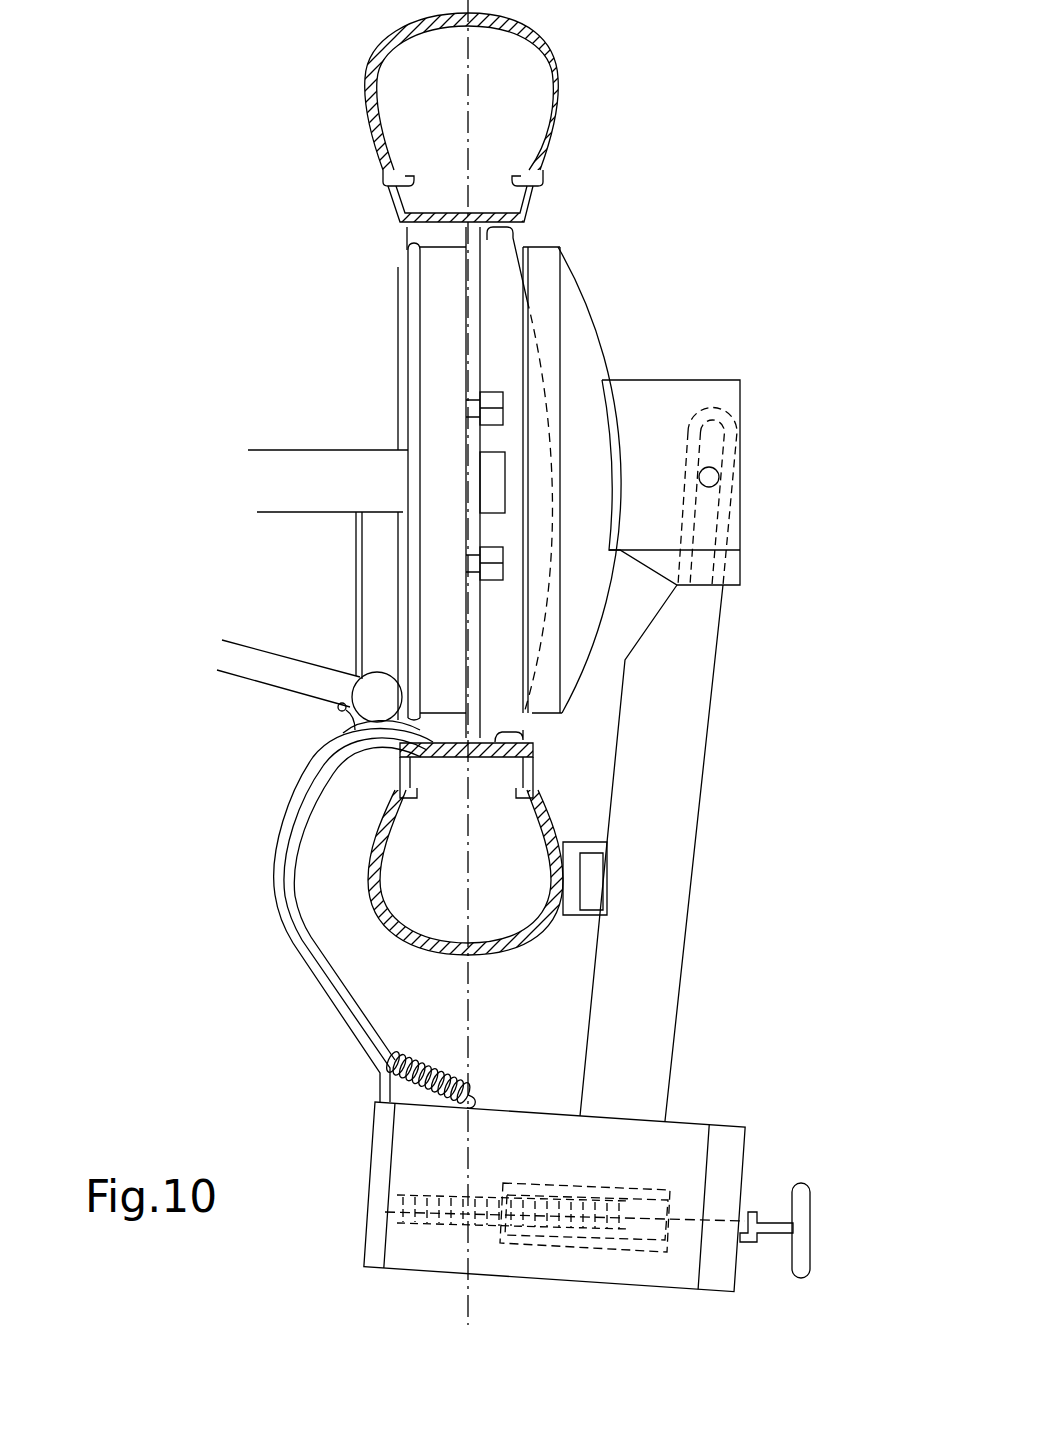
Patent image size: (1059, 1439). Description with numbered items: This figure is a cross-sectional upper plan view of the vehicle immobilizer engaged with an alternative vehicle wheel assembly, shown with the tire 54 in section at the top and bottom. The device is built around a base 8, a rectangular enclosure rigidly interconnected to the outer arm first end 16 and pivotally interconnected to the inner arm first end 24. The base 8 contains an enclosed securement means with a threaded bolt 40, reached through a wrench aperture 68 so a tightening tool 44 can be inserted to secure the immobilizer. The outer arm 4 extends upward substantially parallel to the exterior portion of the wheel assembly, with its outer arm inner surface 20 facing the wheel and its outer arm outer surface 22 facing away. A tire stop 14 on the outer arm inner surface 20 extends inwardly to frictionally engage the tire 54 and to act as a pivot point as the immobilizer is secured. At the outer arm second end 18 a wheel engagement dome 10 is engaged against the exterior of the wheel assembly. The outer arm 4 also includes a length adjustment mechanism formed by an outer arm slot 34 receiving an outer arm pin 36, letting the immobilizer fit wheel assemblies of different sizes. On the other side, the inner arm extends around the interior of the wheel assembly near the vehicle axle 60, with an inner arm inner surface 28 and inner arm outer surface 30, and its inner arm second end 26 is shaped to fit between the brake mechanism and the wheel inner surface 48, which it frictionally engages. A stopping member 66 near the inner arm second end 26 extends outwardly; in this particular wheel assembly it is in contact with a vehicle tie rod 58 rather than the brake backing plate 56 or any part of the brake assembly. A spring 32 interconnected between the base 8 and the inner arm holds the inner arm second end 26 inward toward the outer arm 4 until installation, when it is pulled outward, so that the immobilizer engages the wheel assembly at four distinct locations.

The outer arm 4 is at (708, 831).
The base 8 is at (738, 1124).
The wheel engagement dome 10 is at (605, 313).
The tire stop 14 is at (577, 917).
The outer arm first end 16 is at (665, 1113).
The outer arm second end 18 is at (720, 607).
The outer arm inner surface 20 is at (618, 712).
The outer arm outer surface 22 is at (707, 732).
The inner arm first end 24 is at (378, 1187).
The inner arm second end 26 is at (332, 726).
The inner arm inner surface 28 is at (313, 800).
The inner arm outer surface 30 is at (297, 952).
The spring 32 is at (450, 1063).
The outer arm slot 34 is at (723, 428).
The outer arm pin 36 is at (720, 476).
The threaded bolt 40 is at (443, 1192).
The tightening tool 44 is at (802, 1183).
The wheel inner surface 48 is at (403, 232).
The tire 54 is at (557, 50).
The brake backing plate 56 is at (407, 335).
The tie rod 58 is at (305, 660).
The vehicle axle 60 is at (268, 448).
The stopping member 66 is at (342, 718).
The wrench aperture 68 is at (722, 1232).